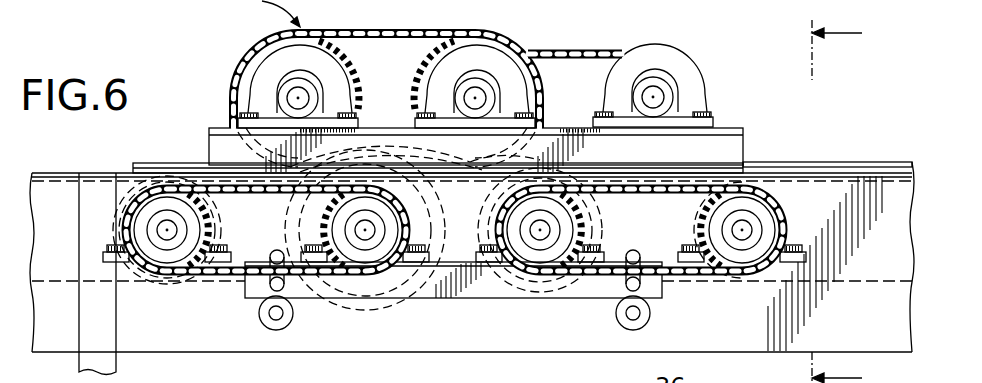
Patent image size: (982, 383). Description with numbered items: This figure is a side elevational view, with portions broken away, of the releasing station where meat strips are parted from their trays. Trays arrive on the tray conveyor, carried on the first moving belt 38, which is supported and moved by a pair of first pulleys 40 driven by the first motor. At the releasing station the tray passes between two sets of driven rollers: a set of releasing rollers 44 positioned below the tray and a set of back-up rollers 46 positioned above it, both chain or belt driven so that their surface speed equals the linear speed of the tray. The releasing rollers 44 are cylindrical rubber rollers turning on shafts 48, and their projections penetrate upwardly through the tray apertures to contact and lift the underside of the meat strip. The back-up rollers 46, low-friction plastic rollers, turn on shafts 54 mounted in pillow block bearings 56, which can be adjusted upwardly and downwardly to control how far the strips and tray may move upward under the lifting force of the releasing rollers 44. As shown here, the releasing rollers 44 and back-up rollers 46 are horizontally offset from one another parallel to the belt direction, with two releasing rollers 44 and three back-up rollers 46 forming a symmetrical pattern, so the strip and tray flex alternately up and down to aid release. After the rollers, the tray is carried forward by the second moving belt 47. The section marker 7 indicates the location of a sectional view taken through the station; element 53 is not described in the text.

The section line 7- 7 is at (848, 201).
The first moving belt 38 is at (58, 173).
The first pulleys 40 is at (128, 203).
The releasing rollers 44 is at (502, 282).
The back-up rollers 46 is at (661, 44).
The second moving belt 47 is at (750, 166).
The shafts 48 is at (357, 237).
The guide roller 53 is at (262, 318).
The shafts 54 is at (291, 93).
The pillow block bearings 56 is at (277, 97).